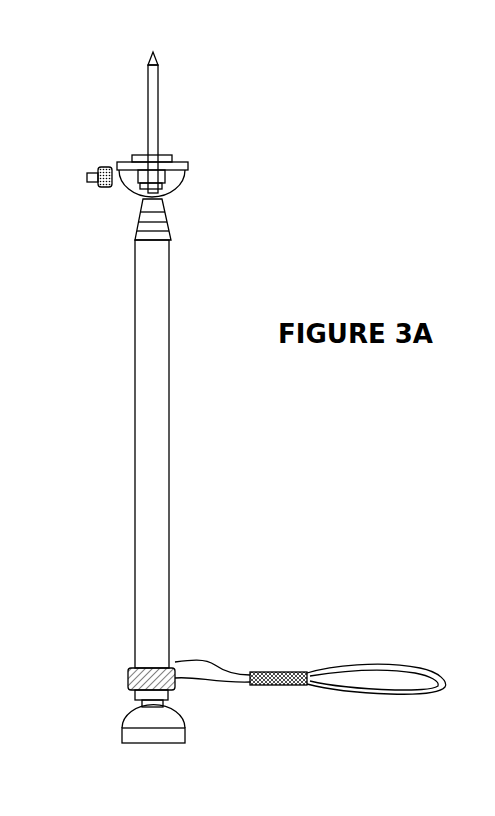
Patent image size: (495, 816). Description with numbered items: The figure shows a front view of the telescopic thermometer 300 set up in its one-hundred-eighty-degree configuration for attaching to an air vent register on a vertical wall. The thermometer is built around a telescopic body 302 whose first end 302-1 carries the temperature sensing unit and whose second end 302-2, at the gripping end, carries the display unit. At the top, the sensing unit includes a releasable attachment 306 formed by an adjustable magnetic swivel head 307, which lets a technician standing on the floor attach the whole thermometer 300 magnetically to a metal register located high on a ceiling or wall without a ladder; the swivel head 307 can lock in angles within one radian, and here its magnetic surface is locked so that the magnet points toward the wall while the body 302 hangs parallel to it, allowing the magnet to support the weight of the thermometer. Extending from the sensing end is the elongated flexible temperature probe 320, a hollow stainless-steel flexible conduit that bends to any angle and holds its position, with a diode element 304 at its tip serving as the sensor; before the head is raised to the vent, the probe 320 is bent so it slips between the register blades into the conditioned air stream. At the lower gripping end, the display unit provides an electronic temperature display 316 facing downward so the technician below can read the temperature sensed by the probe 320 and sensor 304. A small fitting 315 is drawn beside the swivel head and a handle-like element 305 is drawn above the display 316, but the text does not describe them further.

The telescopic thermometer 300 is at (90, 387).
The flexible temperature probe 320 is at (147, 132).
The diode element 304 is at (147, 63).
The releasable attachment 306 is at (188, 167).
The adjustable magnetic swivel head 307 is at (180, 183).
The first end 302-1 is at (172, 207).
The telescopic body 302 is at (170, 390).
The second end 302-2 is at (172, 612).
The locking screw 315 is at (105, 187).
The handle 305 is at (130, 725).
The electronic temperature display 316 is at (157, 743).